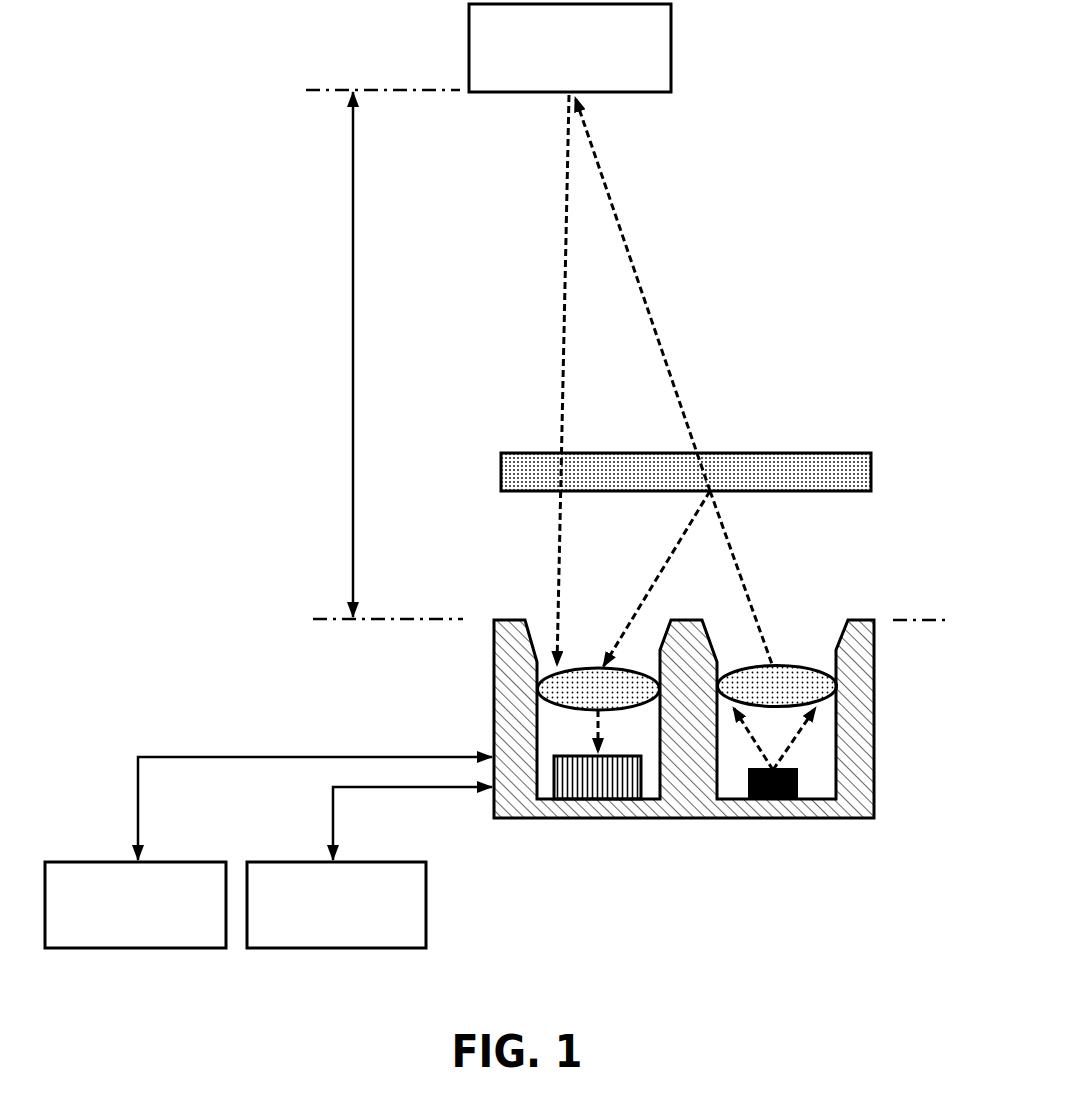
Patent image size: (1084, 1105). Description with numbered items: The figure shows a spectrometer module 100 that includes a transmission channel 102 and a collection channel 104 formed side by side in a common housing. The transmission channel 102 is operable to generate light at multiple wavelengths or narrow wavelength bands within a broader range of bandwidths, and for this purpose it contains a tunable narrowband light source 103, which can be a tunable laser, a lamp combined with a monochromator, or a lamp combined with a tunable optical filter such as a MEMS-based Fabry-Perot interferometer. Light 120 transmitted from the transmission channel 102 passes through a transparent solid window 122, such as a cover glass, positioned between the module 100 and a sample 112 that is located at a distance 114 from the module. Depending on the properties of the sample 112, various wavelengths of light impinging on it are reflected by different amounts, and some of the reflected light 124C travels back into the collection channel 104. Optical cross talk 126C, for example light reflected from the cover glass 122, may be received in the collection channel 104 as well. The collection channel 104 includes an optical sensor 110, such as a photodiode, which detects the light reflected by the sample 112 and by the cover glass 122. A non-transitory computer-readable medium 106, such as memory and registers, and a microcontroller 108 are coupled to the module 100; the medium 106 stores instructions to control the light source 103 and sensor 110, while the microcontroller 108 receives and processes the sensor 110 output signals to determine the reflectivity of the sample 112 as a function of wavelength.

The spectrometer module 100 is at (664, 685).
The transmission channel 102 is at (815, 630).
The tunable narrowband light source 103 is at (852, 753).
The collection channel 104 is at (540, 585).
The non-transitory computer-readable medium 106 is at (115, 912).
The microcontroller 108 is at (310, 912).
The optical sensor 110 is at (568, 756).
The sample 112 is at (553, 70).
The distance 114 is at (353, 350).
The light 120 is at (747, 588).
The transparent solid window 122 is at (870, 465).
The reflected light 124C is at (563, 372).
The optical cross talk 126C is at (647, 593).